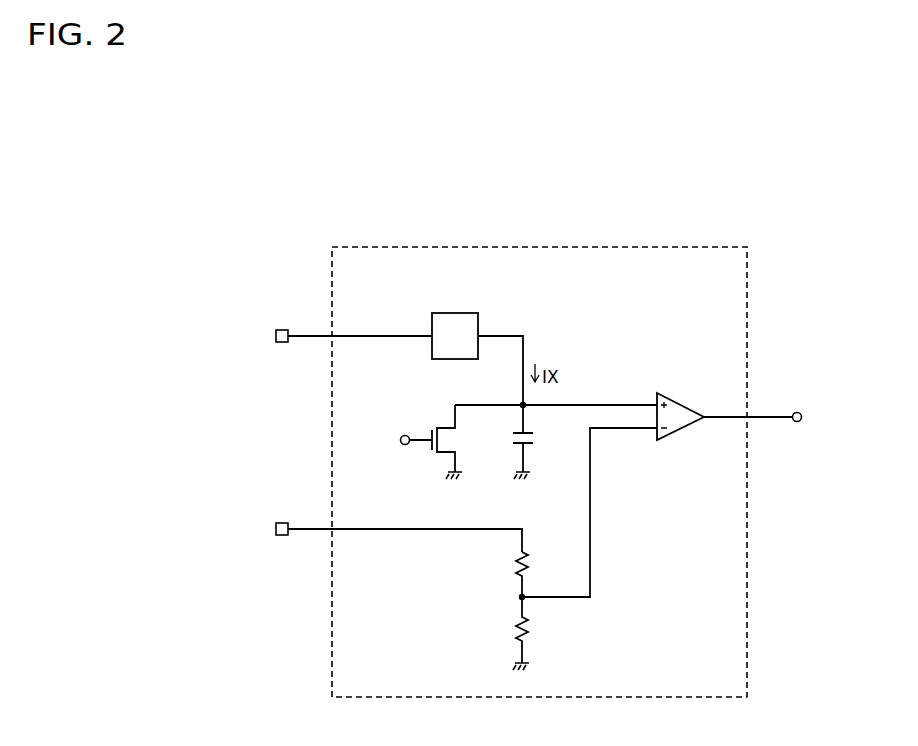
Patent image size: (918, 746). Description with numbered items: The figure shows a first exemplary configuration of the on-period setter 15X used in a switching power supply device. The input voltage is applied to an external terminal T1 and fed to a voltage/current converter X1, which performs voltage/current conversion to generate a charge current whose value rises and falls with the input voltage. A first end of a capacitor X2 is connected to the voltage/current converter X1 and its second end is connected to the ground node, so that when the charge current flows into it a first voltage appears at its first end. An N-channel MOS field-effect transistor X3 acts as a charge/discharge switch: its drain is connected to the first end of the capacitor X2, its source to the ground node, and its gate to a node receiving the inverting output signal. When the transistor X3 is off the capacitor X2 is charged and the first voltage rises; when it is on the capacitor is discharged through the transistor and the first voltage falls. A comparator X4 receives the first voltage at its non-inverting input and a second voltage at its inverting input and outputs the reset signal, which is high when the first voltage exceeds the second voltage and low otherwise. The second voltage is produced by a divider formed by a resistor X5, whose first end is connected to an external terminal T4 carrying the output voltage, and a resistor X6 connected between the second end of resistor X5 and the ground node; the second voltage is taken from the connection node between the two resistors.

The on-period setter 15X is at (540, 247).
The external terminal T1 is at (283, 328).
The external terminal T4 is at (283, 523).
The voltage/current converter X1 is at (455, 313).
The capacitor X2 is at (541, 442).
The N-channel MOS field-effect transistor X3 is at (428, 442).
The comparator X4 is at (680, 404).
The resistor X5 is at (500, 574).
The resistor X6 is at (500, 633).